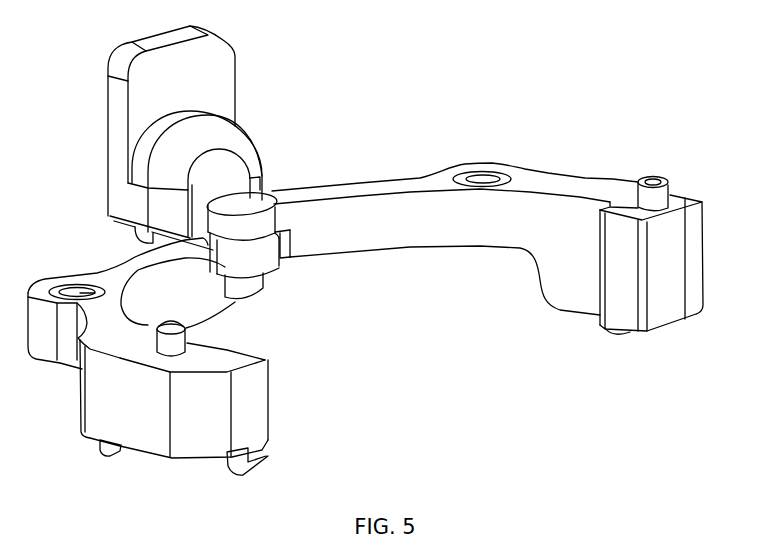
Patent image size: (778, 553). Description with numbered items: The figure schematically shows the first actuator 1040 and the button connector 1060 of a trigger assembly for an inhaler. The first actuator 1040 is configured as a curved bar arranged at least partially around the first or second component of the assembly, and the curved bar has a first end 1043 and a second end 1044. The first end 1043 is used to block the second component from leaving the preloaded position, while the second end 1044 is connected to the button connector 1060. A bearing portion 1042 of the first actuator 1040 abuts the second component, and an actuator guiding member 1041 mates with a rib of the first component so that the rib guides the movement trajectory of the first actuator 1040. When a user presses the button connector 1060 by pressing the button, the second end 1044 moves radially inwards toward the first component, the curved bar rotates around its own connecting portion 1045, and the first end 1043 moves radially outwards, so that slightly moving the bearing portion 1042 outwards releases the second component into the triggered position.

The first actuator 1040 is at (420, 184).
The actuator guiding member 1041 is at (652, 181).
The bearing portion 1042 is at (625, 220).
The first end 1043 is at (677, 220).
The second end 1044 is at (247, 203).
The connecting portion 1045 is at (493, 183).
The button connector 1060 is at (210, 98).